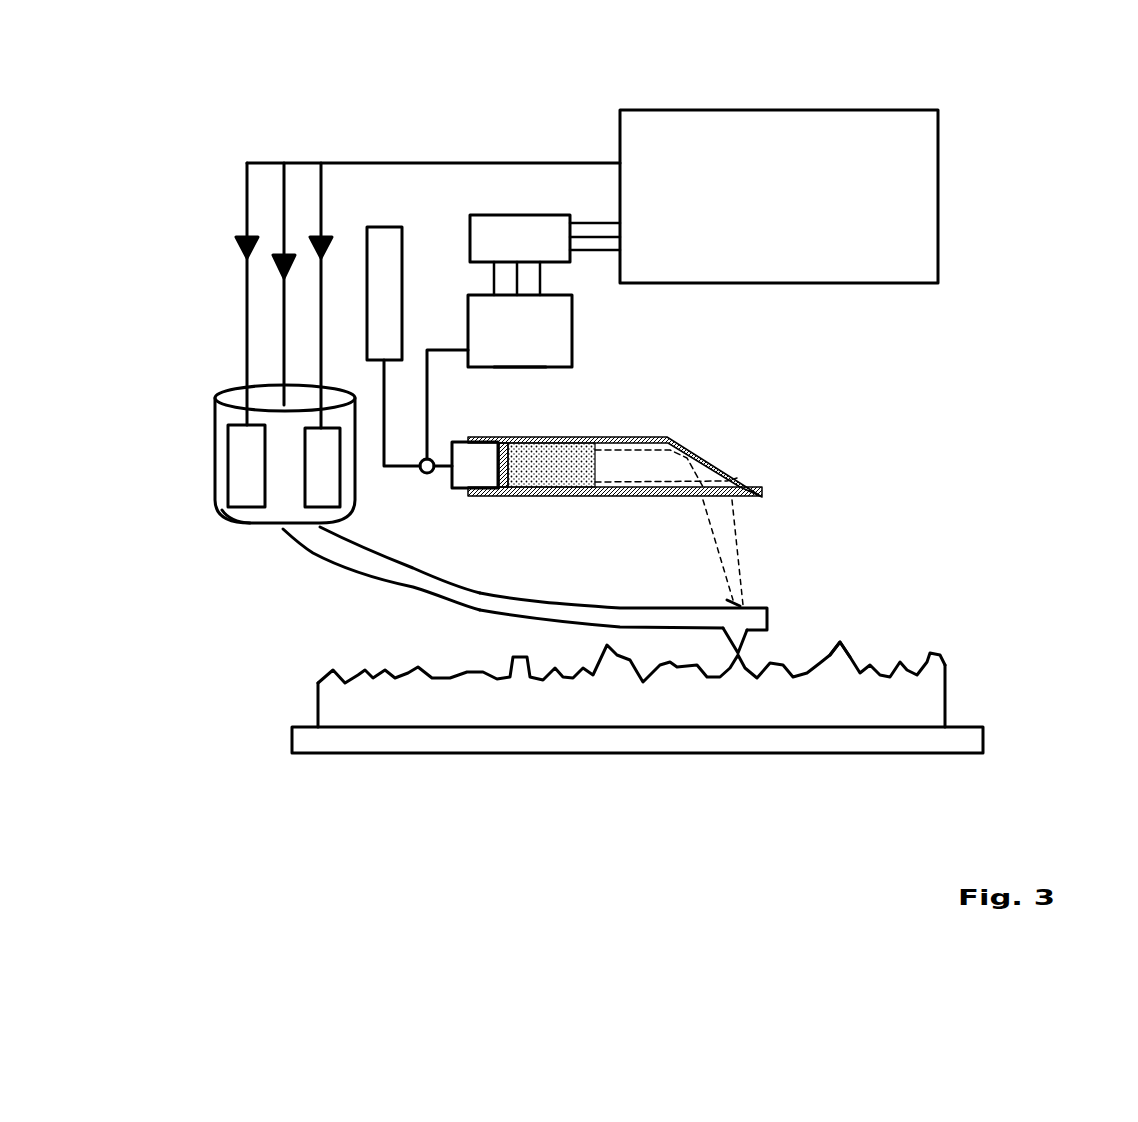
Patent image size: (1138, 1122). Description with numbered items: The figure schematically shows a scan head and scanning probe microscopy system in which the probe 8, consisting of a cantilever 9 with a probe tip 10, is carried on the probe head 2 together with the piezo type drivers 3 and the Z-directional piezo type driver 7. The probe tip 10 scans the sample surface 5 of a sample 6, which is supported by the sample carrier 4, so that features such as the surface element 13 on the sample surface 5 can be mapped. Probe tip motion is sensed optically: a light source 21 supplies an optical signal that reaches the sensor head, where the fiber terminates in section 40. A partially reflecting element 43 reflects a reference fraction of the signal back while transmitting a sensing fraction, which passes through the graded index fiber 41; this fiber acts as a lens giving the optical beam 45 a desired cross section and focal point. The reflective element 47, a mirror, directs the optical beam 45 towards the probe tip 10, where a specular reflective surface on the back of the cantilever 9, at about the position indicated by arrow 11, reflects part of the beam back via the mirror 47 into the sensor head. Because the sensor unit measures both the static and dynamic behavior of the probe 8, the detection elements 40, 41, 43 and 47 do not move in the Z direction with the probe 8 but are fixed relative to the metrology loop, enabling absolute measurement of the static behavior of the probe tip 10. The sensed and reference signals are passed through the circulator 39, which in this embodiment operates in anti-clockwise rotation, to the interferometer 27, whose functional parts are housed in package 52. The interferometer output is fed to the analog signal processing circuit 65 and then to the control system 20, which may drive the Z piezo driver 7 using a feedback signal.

The probe head 2 is at (215, 428).
The piezo type drivers 3 is at (248, 477).
The sample carrier 4 is at (512, 753).
The sample surface 5 is at (448, 677).
The sample 6 is at (338, 708).
The Z-directional piezo type driver 7 is at (248, 494).
The probe 8 is at (313, 557).
The cantilever 9 is at (470, 592).
The probe tip 10 is at (740, 650).
The arrow 11 is at (728, 598).
The surface element 13 is at (845, 650).
The control system 20 is at (940, 195).
The light source 21 is at (383, 227).
The interferometer 27 is at (572, 334).
The circulator 39 is at (423, 473).
The section 40 is at (462, 442).
The graded index fiber 41 is at (538, 450).
The partially reflecting element 43 is at (503, 443).
The optical beam 45 is at (737, 538).
The reflective element 47 is at (710, 463).
The package 52 is at (557, 367).
The analog signal processing circuit 65 is at (513, 215).